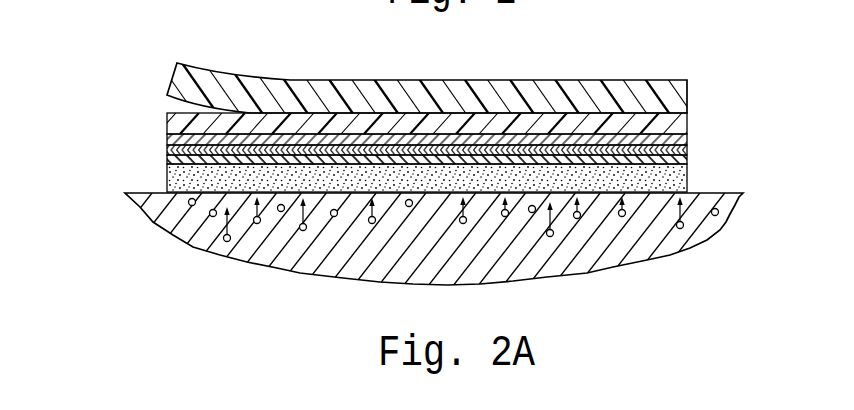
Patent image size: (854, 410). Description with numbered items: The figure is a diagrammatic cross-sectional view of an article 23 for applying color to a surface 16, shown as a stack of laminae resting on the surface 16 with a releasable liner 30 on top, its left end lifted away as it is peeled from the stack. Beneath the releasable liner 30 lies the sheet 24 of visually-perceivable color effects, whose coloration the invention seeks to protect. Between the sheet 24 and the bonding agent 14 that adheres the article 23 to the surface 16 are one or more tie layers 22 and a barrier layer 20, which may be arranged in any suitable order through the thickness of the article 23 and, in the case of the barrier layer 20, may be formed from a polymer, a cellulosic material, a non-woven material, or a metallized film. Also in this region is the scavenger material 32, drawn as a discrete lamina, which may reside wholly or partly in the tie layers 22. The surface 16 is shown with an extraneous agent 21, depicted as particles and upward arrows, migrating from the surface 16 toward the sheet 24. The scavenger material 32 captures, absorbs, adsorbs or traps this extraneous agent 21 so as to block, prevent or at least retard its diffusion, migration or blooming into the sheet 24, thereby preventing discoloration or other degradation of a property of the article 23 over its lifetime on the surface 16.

The bonding agent 14 is at (687, 178).
The surface 16 is at (677, 243).
The barrier layer 20 is at (687, 147).
The extraneous agent 21 is at (303, 231).
The tie layers 22 is at (687, 140).
The article 23 is at (145, 46).
The sheet 24 is at (687, 117).
The releasable liner 30 is at (687, 96).
The scavenger material 32 is at (687, 160).